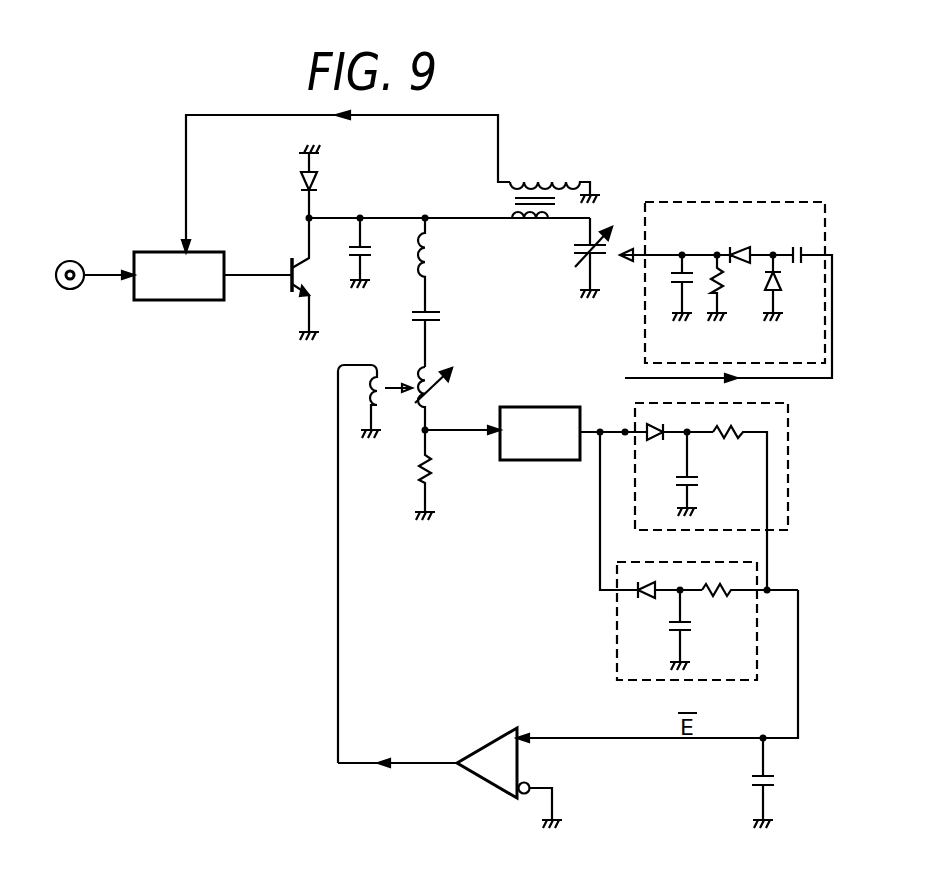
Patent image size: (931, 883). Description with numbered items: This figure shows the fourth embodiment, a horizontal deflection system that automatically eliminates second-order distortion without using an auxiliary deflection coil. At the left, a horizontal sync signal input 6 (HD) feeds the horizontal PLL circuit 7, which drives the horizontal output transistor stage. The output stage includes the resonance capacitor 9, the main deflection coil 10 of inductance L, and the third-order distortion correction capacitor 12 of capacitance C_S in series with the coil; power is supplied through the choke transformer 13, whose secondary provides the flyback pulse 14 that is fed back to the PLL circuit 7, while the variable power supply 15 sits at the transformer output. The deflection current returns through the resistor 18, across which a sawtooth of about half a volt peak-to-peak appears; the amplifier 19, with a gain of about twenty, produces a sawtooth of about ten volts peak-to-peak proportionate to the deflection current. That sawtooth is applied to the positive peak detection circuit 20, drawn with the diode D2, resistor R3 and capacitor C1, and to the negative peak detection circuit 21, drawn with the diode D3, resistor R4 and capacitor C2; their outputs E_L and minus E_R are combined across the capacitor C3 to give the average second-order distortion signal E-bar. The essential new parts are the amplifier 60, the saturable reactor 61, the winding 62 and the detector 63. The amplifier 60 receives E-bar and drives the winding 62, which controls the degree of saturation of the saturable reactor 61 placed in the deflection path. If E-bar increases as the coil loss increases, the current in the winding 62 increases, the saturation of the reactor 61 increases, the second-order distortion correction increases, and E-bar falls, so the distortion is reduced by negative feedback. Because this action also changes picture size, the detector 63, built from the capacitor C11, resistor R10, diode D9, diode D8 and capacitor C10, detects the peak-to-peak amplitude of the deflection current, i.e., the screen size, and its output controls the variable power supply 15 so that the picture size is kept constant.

The horizontal sync signal input 6 is at (72, 261).
The horizontal PLL circuit 7 is at (211, 257).
The resonance capacitor 9 is at (344, 258).
The main deflection coil 10 is at (412, 262).
The third-order distortion correction capacitor 12 is at (440, 317).
The choke transformer for power supply 13 is at (527, 174).
The flyback pulse 14 is at (478, 113).
The power supply 15 is at (612, 227).
The resistor for detecting the deflection current 18 is at (438, 478).
The amplifier 19 is at (573, 406).
The positive peak detection circuit 20 is at (732, 495).
The negative peak detection circuit 21 is at (672, 556).
The amplifier 60 is at (483, 741).
The saturable reactor 61 is at (442, 392).
The winding 62 is at (355, 392).
The detector 63 is at (726, 263).
The diode D2 is at (669, 449).
The resistor R3 is at (740, 508).
The capacitor C1 is at (705, 474).
The diode D3 is at (666, 607).
The resistor R4 is at (750, 606).
The capacitor C2 is at (697, 630).
The capacitor C3 is at (782, 782).
The capacitor C11 is at (662, 282).
The resistor R10 is at (738, 282).
The diode D9 is at (745, 237).
The diode D8 is at (793, 285).
The capacitor C10 is at (798, 237).